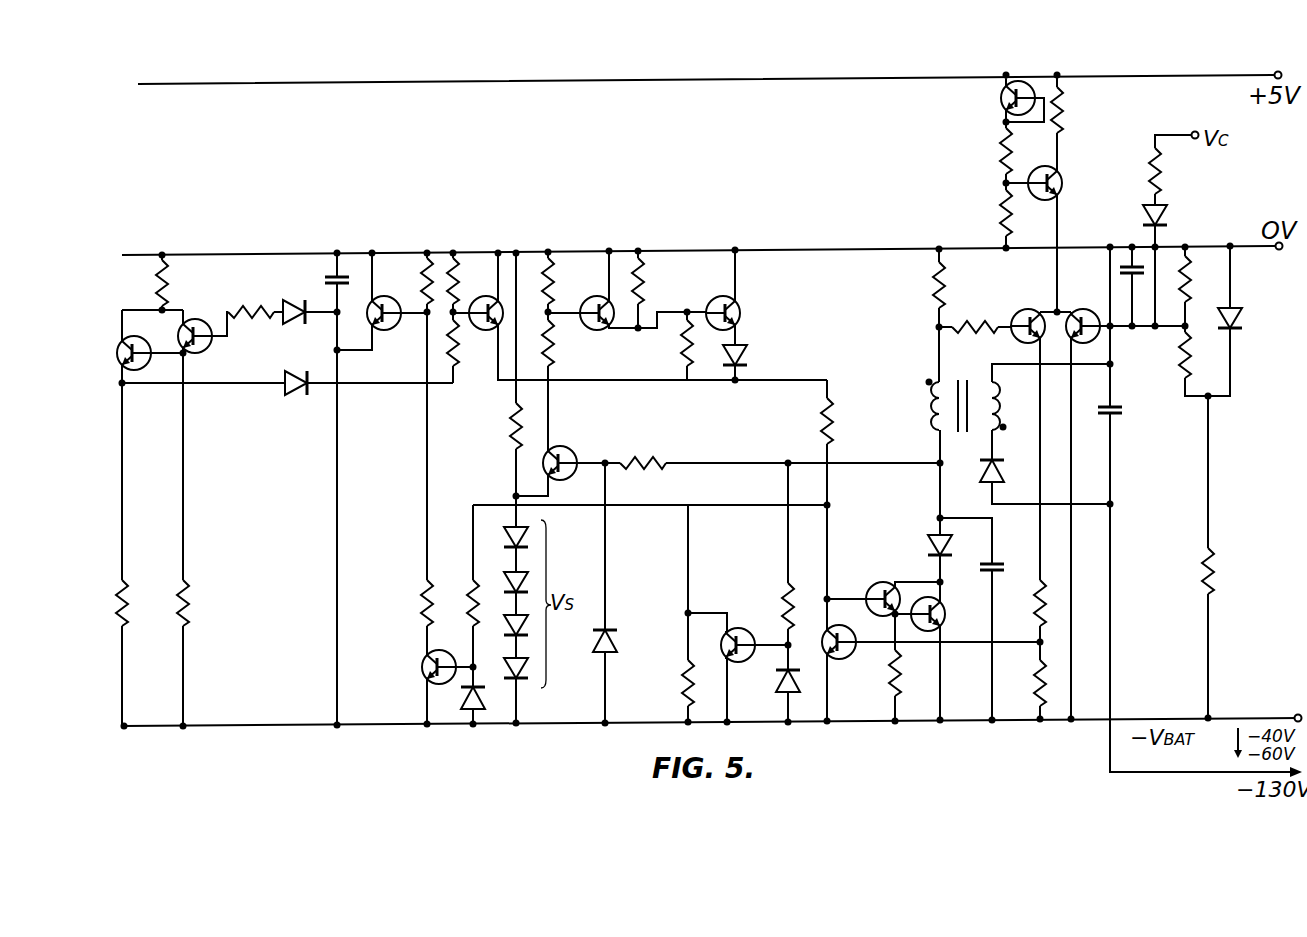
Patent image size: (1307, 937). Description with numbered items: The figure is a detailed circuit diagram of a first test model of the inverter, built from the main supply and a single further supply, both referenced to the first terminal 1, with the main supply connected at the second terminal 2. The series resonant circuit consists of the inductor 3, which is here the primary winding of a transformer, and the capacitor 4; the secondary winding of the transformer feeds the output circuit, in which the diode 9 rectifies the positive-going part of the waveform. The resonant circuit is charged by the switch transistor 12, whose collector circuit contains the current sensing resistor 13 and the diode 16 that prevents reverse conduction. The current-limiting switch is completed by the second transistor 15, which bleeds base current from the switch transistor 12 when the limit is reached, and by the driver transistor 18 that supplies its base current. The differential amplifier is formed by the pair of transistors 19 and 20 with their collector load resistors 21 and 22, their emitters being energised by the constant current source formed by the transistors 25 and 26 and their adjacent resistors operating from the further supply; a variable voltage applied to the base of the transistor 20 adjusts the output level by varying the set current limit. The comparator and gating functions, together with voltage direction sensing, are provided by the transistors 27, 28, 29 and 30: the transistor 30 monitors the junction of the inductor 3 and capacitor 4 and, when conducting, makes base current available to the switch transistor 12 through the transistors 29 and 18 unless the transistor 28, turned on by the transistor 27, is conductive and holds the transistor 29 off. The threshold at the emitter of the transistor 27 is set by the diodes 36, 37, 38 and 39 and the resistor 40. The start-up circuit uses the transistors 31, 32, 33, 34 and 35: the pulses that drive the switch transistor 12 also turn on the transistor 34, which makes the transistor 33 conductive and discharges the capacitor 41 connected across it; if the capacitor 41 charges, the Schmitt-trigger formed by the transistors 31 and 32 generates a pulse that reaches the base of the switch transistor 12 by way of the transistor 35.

The first terminal 1 is at (1245, 249).
The second terminal 2 is at (1238, 718).
The inductor 3 is at (950, 383).
The capacitor 4 is at (1000, 561).
The diode 9 is at (1003, 476).
The first bipolar transistor 12 is at (946, 616).
The resistor 13 is at (933, 301).
The second bipolar transistor 15 is at (849, 658).
The diode 16 is at (931, 536).
The driver transistor 18 is at (877, 584).
The transistor 19 is at (1016, 312).
The transistor 20 is at (1084, 308).
The collector load resistor 21 is at (1050, 600).
The collector load resistor 22 is at (1035, 680).
The transistor 25 is at (1002, 98).
The transistor 26 is at (1063, 183).
The transistor 27 is at (569, 449).
The transistor 28 is at (590, 330).
The transistor 29 is at (741, 316).
The transistor 30 is at (745, 629).
The transistor 31 is at (142, 371).
The transistor 32 is at (199, 319).
The transistor 33 is at (385, 330).
The transistor 34 is at (421, 672).
The transistor 35 is at (478, 297).
The diode 36 is at (503, 529).
The diode 37 is at (503, 578).
The diode 38 is at (503, 620).
The diode 39 is at (527, 670).
The resistor 40 is at (512, 428).
The capacitor 41 is at (325, 281).